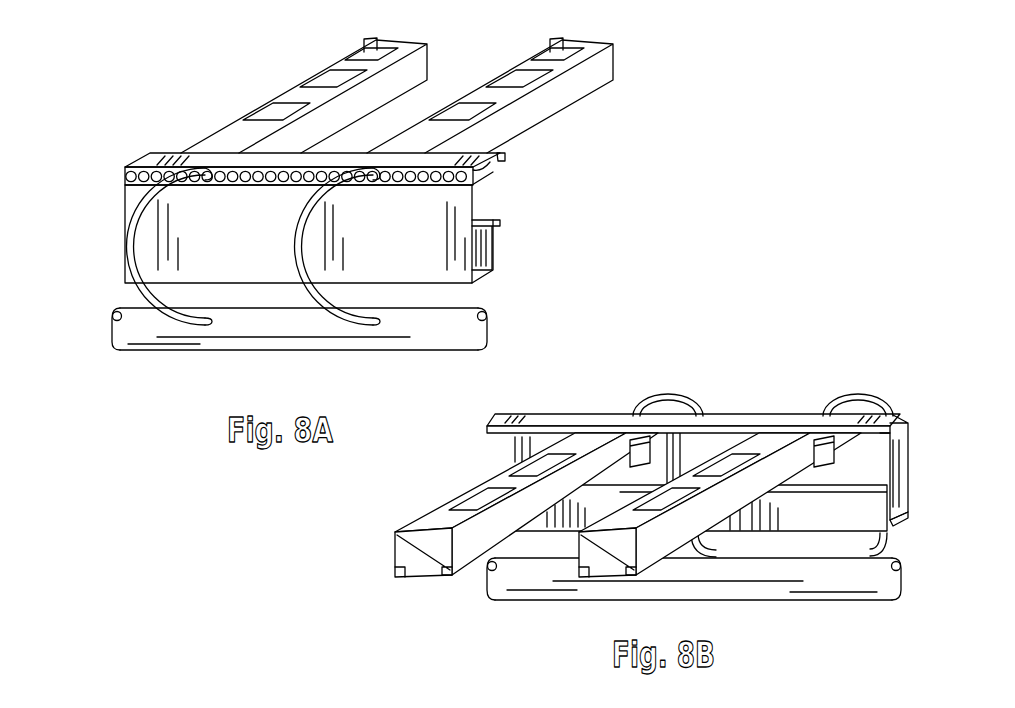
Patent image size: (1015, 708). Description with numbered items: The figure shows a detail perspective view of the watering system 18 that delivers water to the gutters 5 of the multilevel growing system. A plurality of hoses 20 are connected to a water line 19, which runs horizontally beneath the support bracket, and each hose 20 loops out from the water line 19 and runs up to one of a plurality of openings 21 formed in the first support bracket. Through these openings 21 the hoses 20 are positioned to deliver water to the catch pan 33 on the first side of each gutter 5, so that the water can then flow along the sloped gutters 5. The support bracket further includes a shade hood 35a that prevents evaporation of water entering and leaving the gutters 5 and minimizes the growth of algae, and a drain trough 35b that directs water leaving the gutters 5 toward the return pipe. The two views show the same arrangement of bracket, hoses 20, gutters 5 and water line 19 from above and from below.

In FIG. 8A, the gutter 5 is at (285, 95).
In FIG. 8B, the gutter 5 is at (495, 487).
In FIG. 8A, the watering system 18 is at (597, 154).
In FIG. 8B, the watering system 18 is at (690, 375).
In FIG. 8A, the water line 19 is at (165, 346).
In FIG. 8B, the water line 19 is at (880, 590).
In FIG. 8A, the hose 20 is at (308, 292).
In FIG. 8B, the hose 20 is at (840, 392).
In FIG. 8A, the opening 21 is at (237, 172).
In FIG. 8B, the catch pan 33 is at (834, 450).
In FIG. 8A, the shade hood 35a is at (488, 167).
In FIG. 8B, the shade hood 35a is at (900, 425).
In FIG. 8A, the drain trough 35b is at (494, 264).
In FIG. 8B, the drain trough 35b is at (912, 517).